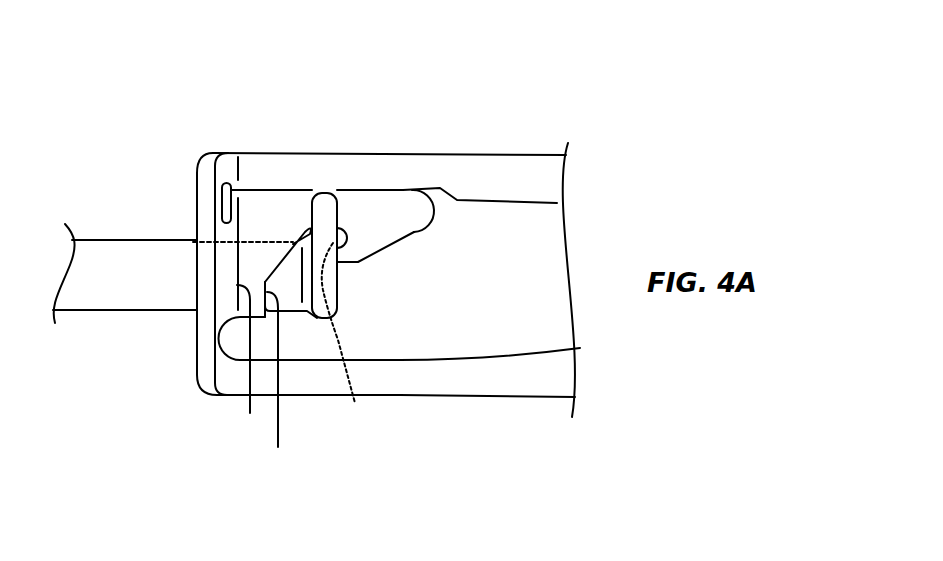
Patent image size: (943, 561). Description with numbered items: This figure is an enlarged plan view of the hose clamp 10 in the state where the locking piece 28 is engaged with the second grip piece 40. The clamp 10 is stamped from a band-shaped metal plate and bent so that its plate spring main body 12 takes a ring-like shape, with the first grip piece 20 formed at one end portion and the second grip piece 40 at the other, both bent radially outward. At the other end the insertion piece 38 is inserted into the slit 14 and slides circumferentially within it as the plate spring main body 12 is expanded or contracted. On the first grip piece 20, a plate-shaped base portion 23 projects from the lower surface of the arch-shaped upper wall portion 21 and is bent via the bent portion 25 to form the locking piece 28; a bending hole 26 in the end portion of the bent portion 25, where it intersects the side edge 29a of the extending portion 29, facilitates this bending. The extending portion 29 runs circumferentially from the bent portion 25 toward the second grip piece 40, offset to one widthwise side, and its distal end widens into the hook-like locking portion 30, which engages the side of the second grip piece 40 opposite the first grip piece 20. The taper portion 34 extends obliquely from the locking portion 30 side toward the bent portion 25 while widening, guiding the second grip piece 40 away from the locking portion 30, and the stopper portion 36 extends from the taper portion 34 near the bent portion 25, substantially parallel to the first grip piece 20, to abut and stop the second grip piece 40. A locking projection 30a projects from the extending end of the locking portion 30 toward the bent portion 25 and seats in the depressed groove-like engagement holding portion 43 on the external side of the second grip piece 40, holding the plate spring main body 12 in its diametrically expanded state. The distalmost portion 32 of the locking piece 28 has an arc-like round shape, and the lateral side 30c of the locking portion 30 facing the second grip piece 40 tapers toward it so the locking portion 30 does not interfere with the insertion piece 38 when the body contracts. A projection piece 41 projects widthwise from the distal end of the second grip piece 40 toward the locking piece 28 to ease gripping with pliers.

The clamp 10 is at (437, 141).
The plate spring main body 12 is at (513, 172).
The slit 14 is at (523, 328).
The first grip piece 20 is at (188, 364).
The arch-shaped upper wall portion 21 is at (203, 210).
The base portion 23 is at (225, 297).
The bent portion 25 is at (249, 366).
The bending hole 26 is at (228, 183).
The locking piece 28 is at (402, 236).
The extending portion 29 is at (260, 197).
The side edge 29a is at (283, 175).
The locking portion 30 is at (368, 235).
The locking projection 30a is at (343, 264).
The lateral side 30c is at (392, 247).
The distalmost portion 32 is at (432, 211).
The taper portion 34 is at (270, 259).
The stopper portion 36 is at (284, 384).
The insertion piece 38 is at (82, 298).
The second grip piece 40 is at (318, 323).
The projection piece 41 is at (330, 192).
The engagement holding portion 43 is at (348, 334).